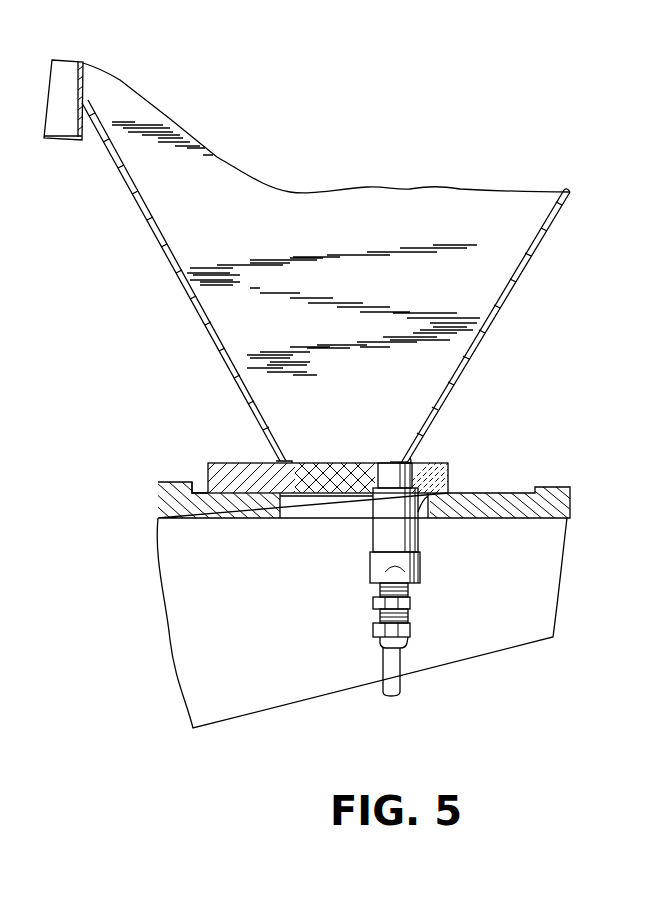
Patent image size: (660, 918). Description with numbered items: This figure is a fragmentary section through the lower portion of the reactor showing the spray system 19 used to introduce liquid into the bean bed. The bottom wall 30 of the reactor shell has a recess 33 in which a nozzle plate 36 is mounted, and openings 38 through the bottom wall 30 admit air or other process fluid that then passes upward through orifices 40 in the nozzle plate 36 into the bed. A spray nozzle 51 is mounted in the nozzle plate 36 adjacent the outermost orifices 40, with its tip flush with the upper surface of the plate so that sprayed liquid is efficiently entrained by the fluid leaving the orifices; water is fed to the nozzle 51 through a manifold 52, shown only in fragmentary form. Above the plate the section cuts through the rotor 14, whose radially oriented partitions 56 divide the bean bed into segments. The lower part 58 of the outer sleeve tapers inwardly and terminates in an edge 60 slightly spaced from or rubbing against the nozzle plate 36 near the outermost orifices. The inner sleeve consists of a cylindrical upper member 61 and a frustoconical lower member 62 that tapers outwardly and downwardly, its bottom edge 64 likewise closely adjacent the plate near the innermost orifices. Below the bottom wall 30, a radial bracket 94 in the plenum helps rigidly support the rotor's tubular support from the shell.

The rotor 14 is at (355, 281).
The spray system 19 is at (431, 565).
The bottom wall 30 is at (180, 482).
The recess 33 is at (232, 486).
The nozzle plate 36 is at (225, 463).
The opening 38 is at (426, 512).
The orifice 40 is at (313, 436).
The spray nozzle 51 is at (398, 462).
The manifold 52 is at (415, 617).
The partition 56 is at (366, 238).
The lower part of outer sleeve 58 is at (518, 282).
The edge 60 is at (417, 462).
The upper member 61 is at (84, 86).
The lower member 62 is at (205, 320).
The bottom edge 64 is at (278, 462).
The radial bracket 94 is at (426, 672).